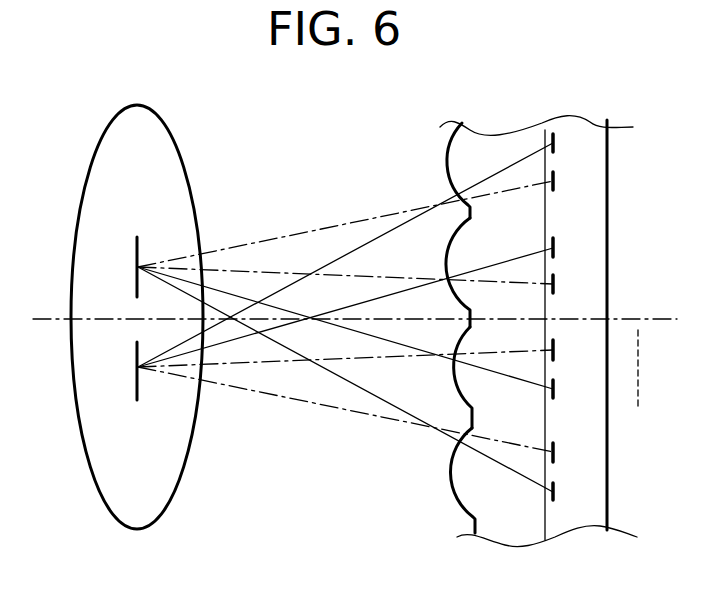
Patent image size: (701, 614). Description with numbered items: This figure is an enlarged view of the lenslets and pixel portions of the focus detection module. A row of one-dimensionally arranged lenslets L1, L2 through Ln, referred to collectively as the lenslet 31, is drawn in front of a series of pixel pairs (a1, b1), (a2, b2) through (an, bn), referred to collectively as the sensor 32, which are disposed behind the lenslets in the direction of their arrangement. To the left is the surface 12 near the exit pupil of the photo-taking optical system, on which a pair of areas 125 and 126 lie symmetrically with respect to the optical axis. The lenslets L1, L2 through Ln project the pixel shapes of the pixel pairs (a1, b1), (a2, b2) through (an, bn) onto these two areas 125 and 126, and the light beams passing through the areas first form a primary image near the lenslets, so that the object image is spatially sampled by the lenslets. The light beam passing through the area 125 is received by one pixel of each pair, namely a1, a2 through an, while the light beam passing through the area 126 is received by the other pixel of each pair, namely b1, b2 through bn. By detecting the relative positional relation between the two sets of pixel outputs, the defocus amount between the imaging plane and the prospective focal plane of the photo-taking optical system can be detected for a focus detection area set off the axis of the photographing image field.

The surface near the exit pupil 12 is at (114, 509).
The area 125 is at (135, 398).
The area 126 is at (135, 286).
The lenslet 31 is at (521, 357).
The sensor 32 is at (589, 523).
The lenslet L1 is at (446, 165).
The lenslet L2 is at (447, 252).
The lenslet Ln is at (441, 480).
The pixel a1 is at (557, 139).
The pixel b1 is at (557, 178).
The pixel a2 is at (557, 240).
The pixel b2 is at (557, 282).
The pixel an is at (557, 450).
The pixel bn is at (557, 492).